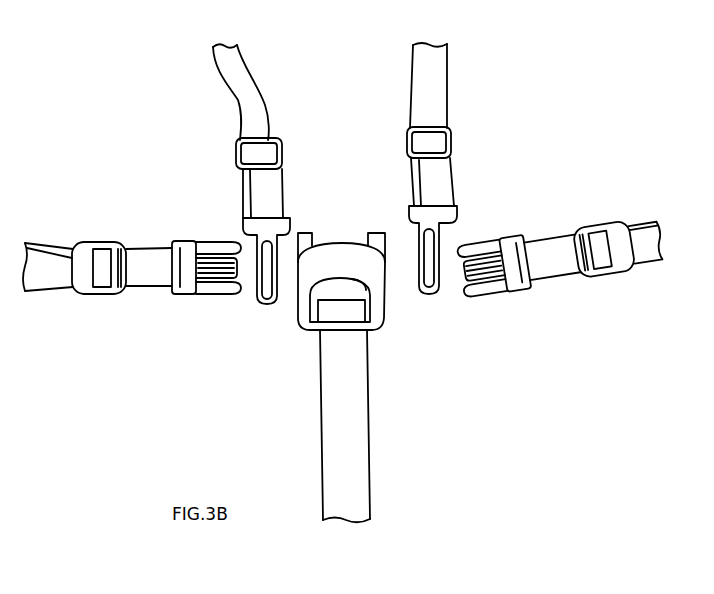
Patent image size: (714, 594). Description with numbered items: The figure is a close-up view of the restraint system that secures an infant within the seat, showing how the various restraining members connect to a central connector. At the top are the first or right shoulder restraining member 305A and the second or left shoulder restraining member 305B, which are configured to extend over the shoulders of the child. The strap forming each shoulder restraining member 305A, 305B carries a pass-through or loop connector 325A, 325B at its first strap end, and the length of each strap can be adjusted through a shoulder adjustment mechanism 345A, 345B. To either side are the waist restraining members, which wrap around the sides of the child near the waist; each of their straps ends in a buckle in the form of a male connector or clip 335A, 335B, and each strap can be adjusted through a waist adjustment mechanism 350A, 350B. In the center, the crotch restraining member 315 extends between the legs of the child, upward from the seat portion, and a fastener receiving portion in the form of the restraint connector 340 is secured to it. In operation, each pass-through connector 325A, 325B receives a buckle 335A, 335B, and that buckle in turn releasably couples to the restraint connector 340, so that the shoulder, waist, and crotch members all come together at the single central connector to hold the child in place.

The first shoulder restraining member 305A is at (440, 70).
The second shoulder restraining member 305B is at (255, 83).
The shoulder adjustment mechanism 345A is at (433, 128).
The shoulder adjustment mechanism 345B is at (247, 138).
The pass-through connector 325A is at (457, 226).
The pass-through connector 325B is at (250, 216).
The waist adjustment mechanism 350A is at (613, 235).
The waist adjustment mechanism 350B is at (82, 278).
The male connector 335A is at (495, 278).
The male connector 335B is at (232, 292).
The restraint connector 340 is at (378, 288).
The crotch restraining member 315 is at (368, 448).